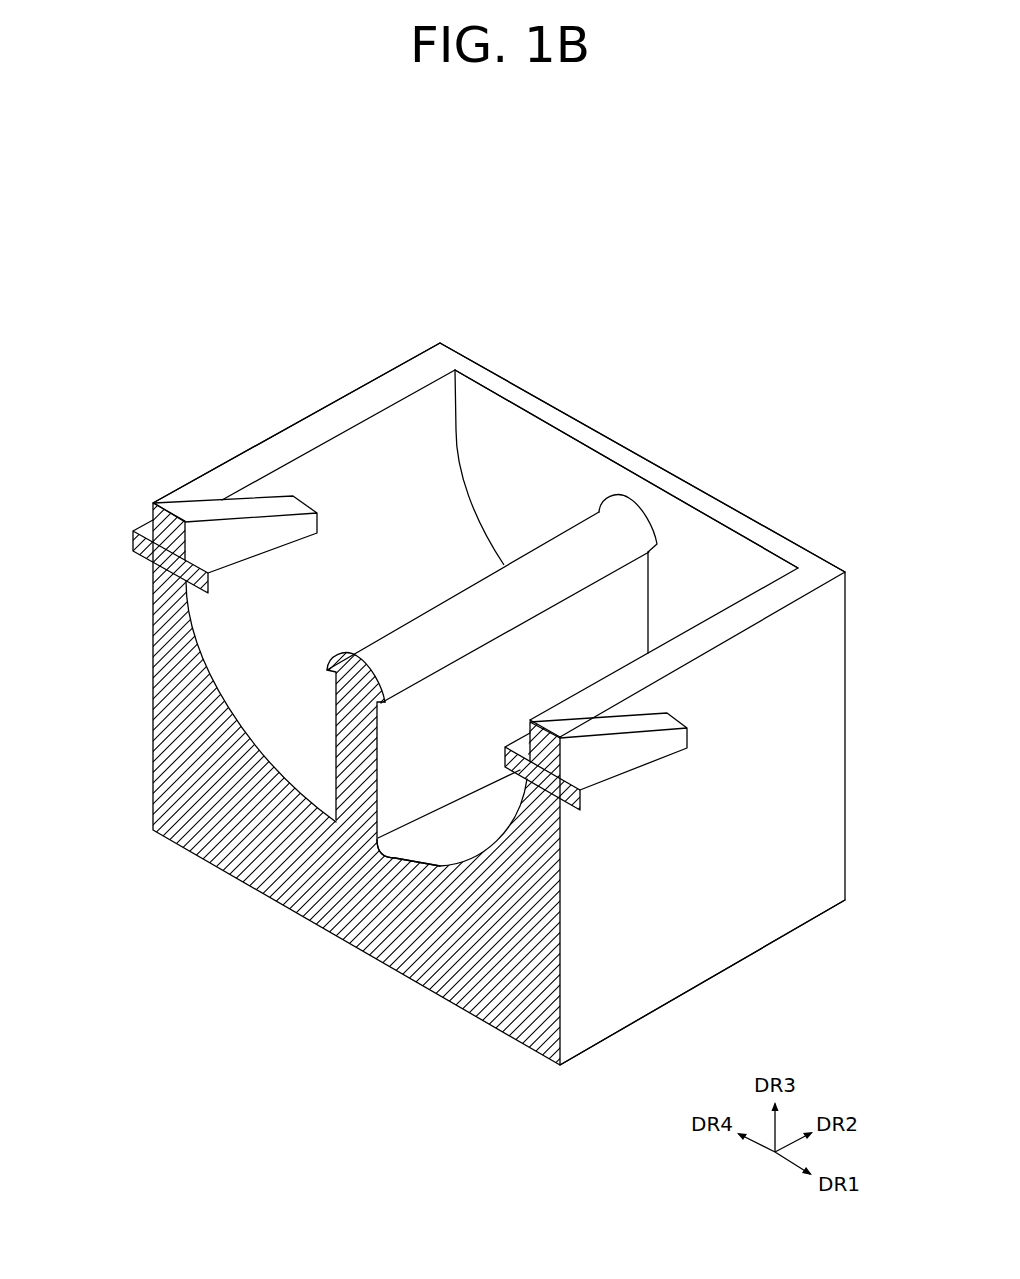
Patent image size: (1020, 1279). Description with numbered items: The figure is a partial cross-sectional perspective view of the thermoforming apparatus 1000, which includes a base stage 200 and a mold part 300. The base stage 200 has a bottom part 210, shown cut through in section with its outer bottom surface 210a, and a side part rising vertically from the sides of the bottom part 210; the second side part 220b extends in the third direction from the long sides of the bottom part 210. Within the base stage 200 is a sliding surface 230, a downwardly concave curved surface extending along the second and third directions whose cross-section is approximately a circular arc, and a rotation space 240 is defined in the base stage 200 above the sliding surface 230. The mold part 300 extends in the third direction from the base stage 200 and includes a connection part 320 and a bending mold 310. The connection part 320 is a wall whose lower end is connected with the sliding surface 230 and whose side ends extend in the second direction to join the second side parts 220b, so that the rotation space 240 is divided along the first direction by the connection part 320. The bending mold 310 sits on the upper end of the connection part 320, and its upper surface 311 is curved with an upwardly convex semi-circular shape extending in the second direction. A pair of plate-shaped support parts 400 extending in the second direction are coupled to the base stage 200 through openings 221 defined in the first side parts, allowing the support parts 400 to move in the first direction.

The thermoforming apparatus 1000 is at (745, 298).
The base stage 200 is at (288, 1045).
The bottom part 210 is at (470, 966).
The bottom surface of housing 210a is at (580, 1012).
The second side part 220b is at (593, 432).
The opening 221 is at (153, 536).
The sliding surface 230 is at (472, 849).
The rotation space 240 is at (517, 425).
The mold part 300 is at (421, 680).
The bending mold 310 is at (429, 653).
The upper surface 311 is at (613, 535).
The connection part 320 is at (350, 755).
The support part 400 is at (130, 541).